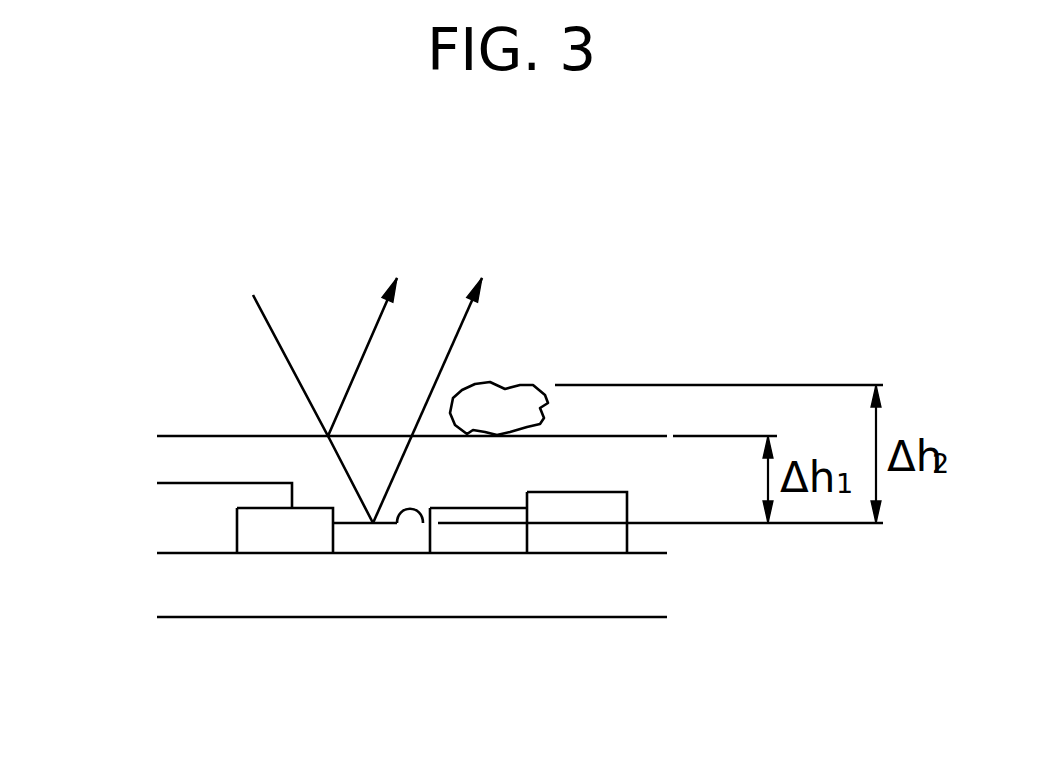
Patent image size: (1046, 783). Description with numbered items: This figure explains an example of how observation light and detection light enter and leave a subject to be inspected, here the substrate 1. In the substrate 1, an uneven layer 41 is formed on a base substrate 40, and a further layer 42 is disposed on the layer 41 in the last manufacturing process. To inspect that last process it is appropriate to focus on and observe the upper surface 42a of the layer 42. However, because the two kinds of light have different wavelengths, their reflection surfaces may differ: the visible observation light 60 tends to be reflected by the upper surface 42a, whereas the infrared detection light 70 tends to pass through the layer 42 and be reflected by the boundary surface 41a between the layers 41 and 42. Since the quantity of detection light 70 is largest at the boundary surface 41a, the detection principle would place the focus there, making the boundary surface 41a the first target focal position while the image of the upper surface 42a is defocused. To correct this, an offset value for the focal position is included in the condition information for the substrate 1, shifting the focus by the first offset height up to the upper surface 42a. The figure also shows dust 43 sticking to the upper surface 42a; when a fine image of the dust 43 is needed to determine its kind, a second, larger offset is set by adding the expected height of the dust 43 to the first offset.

The substrate 1 is at (162, 368).
The base substrate 40 is at (198, 593).
The uneven layer 41 is at (373, 542).
The boundary surface 41a is at (421, 520).
The layer 42 is at (582, 467).
The upper surface 42a is at (252, 433).
The dust 43 is at (510, 380).
The observation light 60 is at (268, 318).
The detection light 70 is at (470, 330).